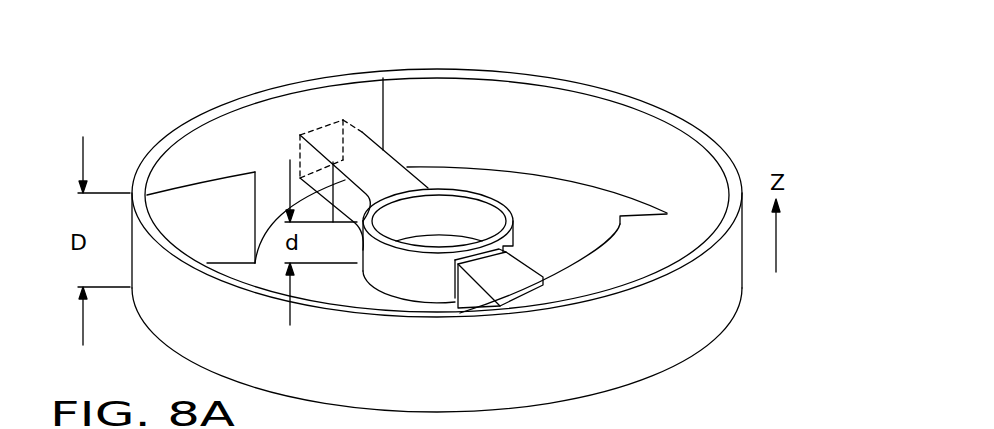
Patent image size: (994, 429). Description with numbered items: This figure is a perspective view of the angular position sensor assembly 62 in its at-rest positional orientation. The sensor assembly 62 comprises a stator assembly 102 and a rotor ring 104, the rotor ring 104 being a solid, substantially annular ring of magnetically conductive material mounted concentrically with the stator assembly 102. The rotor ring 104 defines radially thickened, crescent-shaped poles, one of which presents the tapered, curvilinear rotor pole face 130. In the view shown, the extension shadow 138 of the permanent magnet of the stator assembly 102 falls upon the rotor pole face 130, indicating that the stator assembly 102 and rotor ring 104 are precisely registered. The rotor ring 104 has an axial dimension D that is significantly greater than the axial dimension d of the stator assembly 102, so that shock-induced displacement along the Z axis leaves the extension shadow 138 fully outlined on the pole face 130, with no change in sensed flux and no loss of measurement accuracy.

The angular position sensor assembly 62 is at (740, 110).
The stator assembly 102 is at (498, 203).
The rotor ring 104 is at (697, 328).
The rotor pole face 130 is at (268, 192).
The extension shadow 138 is at (327, 138).